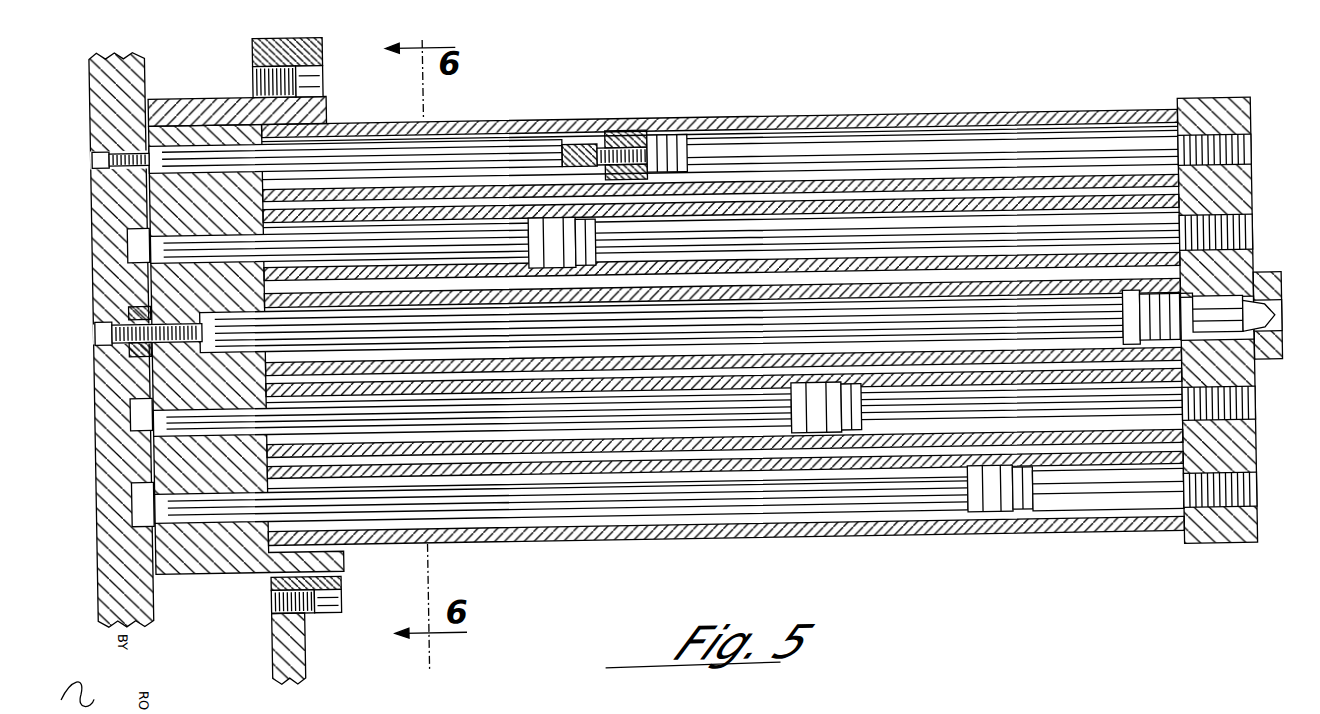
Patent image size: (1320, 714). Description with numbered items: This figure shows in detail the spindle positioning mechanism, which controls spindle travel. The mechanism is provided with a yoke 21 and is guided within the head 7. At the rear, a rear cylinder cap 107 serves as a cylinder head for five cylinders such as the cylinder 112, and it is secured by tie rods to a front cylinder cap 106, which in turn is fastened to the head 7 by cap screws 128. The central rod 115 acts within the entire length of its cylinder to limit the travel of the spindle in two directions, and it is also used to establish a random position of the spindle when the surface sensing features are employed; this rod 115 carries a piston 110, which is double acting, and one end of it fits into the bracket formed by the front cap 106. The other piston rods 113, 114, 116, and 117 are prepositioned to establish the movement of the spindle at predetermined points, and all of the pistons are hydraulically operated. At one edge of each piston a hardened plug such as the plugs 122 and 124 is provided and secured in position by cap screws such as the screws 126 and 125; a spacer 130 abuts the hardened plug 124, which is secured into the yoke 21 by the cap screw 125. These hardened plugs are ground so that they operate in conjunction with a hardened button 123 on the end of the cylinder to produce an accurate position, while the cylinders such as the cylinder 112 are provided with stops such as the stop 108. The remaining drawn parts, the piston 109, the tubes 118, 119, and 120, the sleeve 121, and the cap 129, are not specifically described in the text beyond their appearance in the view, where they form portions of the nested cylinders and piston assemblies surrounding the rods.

The head 7 is at (268, 646).
The yoke 21 is at (108, 556).
The front cylinder cap 106 is at (325, 607).
The rear cylinder cap 107 is at (1222, 107).
The stop 108 is at (234, 108).
The piston 109 is at (986, 517).
The piston 110 is at (1257, 282).
The cylinder 112 is at (866, 539).
The piston rod 113 is at (447, 153).
The piston rod 114 is at (393, 237).
The rod 115 is at (615, 345).
The piston rod 116 is at (516, 428).
The piston rod 117 is at (721, 515).
The upper outer tube 118 is at (770, 118).
The inner tube 119 is at (835, 203).
The inner tube 120 is at (1142, 451).
The cylinder sleeve 121 is at (1085, 517).
The hardened plug 122 is at (130, 492).
The hardened button 123 is at (174, 566).
The hardened plug 124 is at (150, 340).
The cap screw 125 is at (98, 322).
The cap screw 126 is at (98, 150).
The cap screw 128 is at (332, 595).
The retaining cap 129 is at (691, 128).
The spacer 130 is at (150, 265).